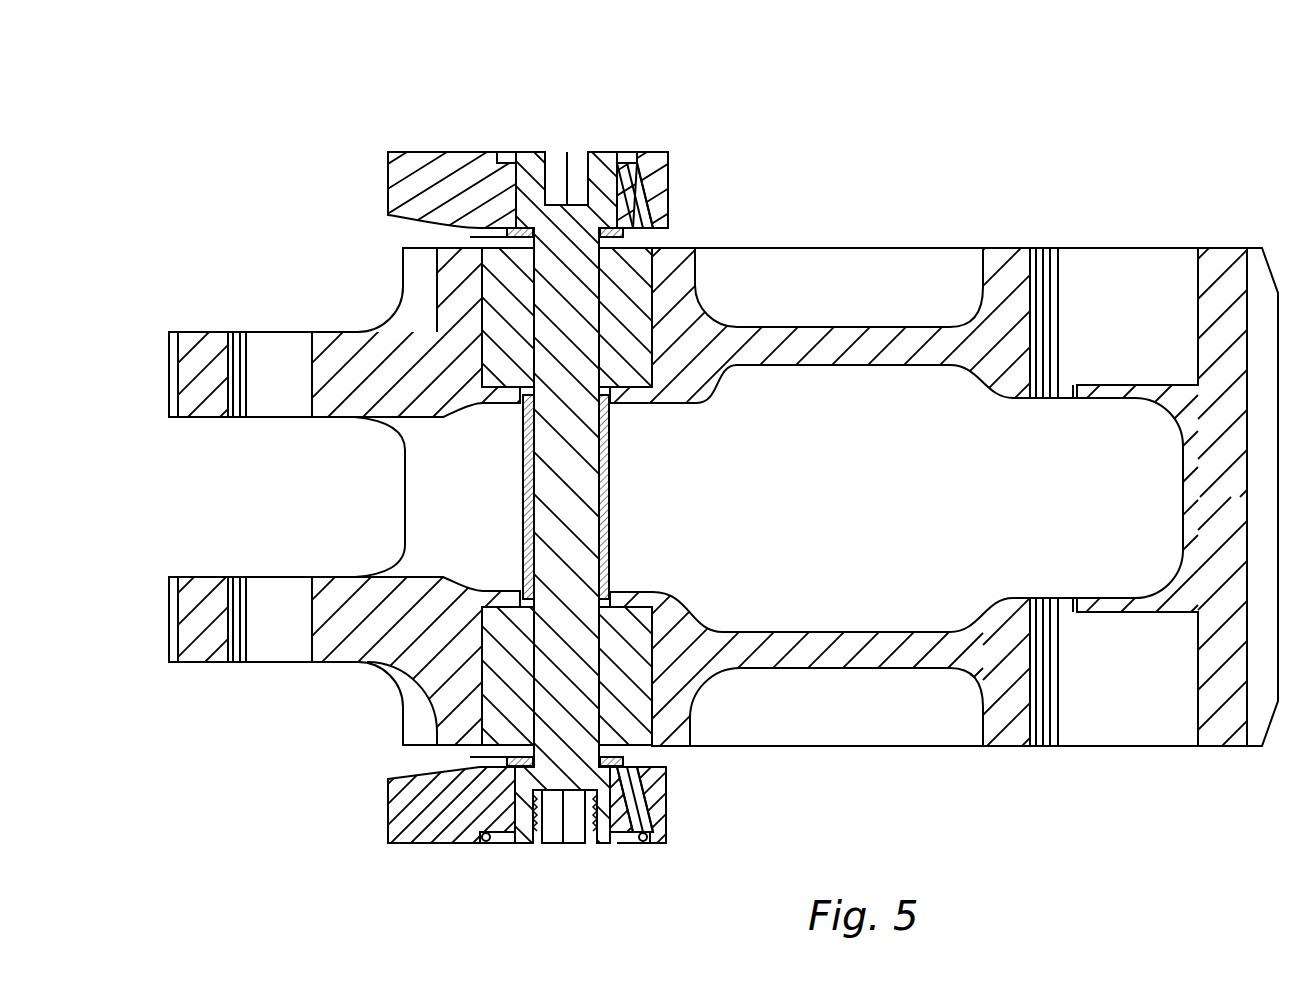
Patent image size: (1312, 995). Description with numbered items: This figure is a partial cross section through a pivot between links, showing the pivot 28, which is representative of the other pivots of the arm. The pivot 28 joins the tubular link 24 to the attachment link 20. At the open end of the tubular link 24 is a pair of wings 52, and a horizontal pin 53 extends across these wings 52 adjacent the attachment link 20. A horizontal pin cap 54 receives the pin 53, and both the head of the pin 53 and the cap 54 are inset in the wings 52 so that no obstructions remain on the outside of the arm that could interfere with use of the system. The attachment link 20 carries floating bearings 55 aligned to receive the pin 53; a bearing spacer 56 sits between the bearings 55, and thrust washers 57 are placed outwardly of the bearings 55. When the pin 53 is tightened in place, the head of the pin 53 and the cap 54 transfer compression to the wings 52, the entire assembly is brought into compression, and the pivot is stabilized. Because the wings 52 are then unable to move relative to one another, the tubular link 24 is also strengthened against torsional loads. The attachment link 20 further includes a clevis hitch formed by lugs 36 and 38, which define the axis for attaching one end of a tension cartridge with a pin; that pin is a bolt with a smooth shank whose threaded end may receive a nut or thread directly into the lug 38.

The link 20 is at (840, 248).
The tubular link 24 is at (453, 152).
The pivot 28 is at (574, 140).
The lug 36 is at (205, 345).
The lug 38 is at (205, 660).
The wings 52 is at (640, 173).
The horizontal pin 53 is at (590, 518).
The horizontal pin cap 54 is at (598, 843).
The floating bearings 55 is at (640, 370).
The bearing spacer 56 is at (607, 560).
The thrust washers 57 is at (623, 238).